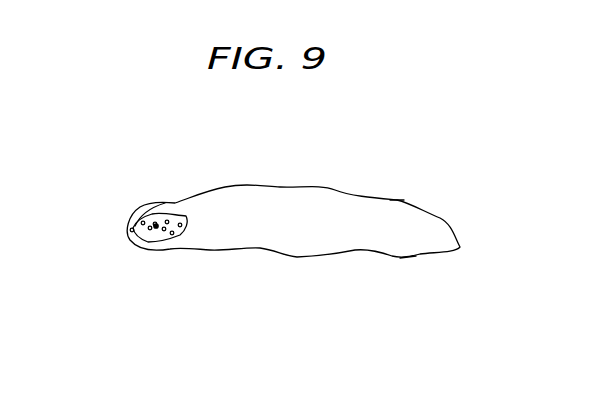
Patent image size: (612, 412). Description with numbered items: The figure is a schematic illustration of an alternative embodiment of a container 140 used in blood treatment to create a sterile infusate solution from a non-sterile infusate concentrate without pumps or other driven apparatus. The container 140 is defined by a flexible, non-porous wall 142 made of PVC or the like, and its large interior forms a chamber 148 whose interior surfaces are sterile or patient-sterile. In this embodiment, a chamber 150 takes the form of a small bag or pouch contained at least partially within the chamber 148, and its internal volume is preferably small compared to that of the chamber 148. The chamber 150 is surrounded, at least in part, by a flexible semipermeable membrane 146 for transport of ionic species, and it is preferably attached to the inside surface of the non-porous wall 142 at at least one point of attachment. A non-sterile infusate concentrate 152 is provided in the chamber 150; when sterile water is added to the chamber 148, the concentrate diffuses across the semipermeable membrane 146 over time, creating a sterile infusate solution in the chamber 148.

The container 140 is at (280, 162).
The first flexible, non-porous wall 142 is at (408, 258).
The semipermeable membrane 146 is at (163, 217).
The chamber 148 is at (398, 200).
The chamber 150 is at (131, 231).
The non-sterile infusate concentrate 152 is at (153, 233).